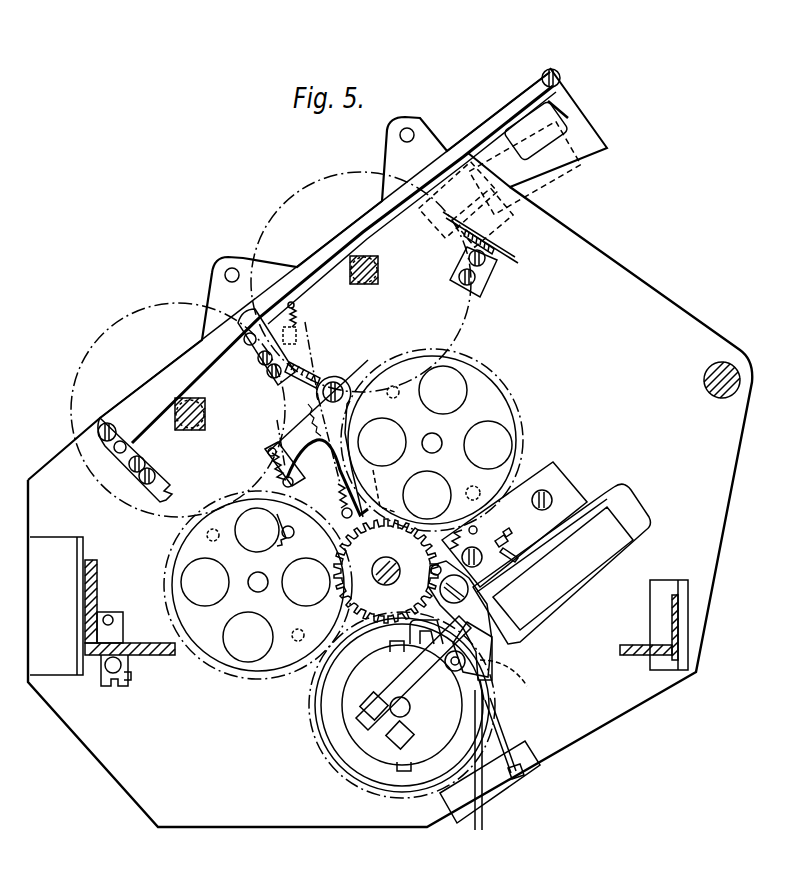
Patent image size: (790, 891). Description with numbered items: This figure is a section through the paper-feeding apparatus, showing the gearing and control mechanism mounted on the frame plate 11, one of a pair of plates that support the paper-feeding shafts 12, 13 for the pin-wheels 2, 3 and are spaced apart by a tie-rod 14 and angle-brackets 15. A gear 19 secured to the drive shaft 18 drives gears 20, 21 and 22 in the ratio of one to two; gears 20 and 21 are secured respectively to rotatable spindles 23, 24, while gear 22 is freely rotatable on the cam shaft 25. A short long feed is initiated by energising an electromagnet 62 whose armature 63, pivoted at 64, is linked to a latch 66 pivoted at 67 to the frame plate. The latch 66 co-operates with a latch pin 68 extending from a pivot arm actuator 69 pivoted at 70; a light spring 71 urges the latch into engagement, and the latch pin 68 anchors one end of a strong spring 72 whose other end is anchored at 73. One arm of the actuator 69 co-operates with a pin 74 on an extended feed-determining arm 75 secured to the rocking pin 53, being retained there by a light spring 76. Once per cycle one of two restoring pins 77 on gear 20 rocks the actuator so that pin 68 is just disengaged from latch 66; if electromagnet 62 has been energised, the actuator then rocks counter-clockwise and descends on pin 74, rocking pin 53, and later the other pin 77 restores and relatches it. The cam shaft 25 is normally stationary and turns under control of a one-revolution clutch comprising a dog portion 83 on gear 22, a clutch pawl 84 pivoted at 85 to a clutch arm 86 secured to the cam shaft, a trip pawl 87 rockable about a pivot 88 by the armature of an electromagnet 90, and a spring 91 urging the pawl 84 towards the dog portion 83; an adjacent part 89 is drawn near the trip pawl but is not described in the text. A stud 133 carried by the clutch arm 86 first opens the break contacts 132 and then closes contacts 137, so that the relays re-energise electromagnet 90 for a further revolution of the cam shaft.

The pin-wheels 2 is at (292, 197).
The pin-wheels 3 is at (164, 302).
The frame plate 11 is at (430, 140).
The paper-feeding shaft 12 is at (381, 276).
The paper-feeding shaft 13 is at (206, 413).
The tie-rod 14 is at (724, 397).
The angle-brackets 15 is at (172, 657).
The drive shaft 18 is at (380, 567).
The gear 19 is at (345, 581).
The gear 20 is at (524, 403).
The gear 21 is at (243, 672).
The gear 22 is at (345, 784).
The spindle 23 is at (443, 446).
The spindle 24 is at (248, 583).
The cam shaft 25 is at (398, 702).
The rocking pin 53 is at (292, 535).
The electromagnet 62 is at (510, 230).
The armature 63 is at (492, 145).
The pivot 64 is at (534, 204).
The latch 66 is at (286, 386).
The pivot 67 is at (233, 320).
The latch pin 68 is at (297, 412).
The pivot arm actuator 69 is at (354, 389).
The pivot 70 is at (349, 375).
The light spring 71 is at (298, 322).
The strong spring 72 is at (337, 490).
The anchor 73 is at (347, 518).
The pin 74 is at (302, 490).
The feed-determining arm 75 is at (284, 518).
The light spring 76 is at (268, 462).
The restoring pins 77 is at (400, 391).
The dog portion 83 is at (352, 702).
The clutch pawl 84 is at (391, 639).
The pivot 85 is at (434, 691).
The clutch arm 86 is at (422, 720).
The trip pawl 87 is at (503, 614).
The pivot 88 is at (441, 585).
The plate 89 is at (513, 648).
The electromagnet 90 is at (592, 578).
The spring 91 is at (514, 684).
The break contacts 132 is at (483, 779).
The stud 133 is at (430, 707).
The contacts 137 is at (504, 710).